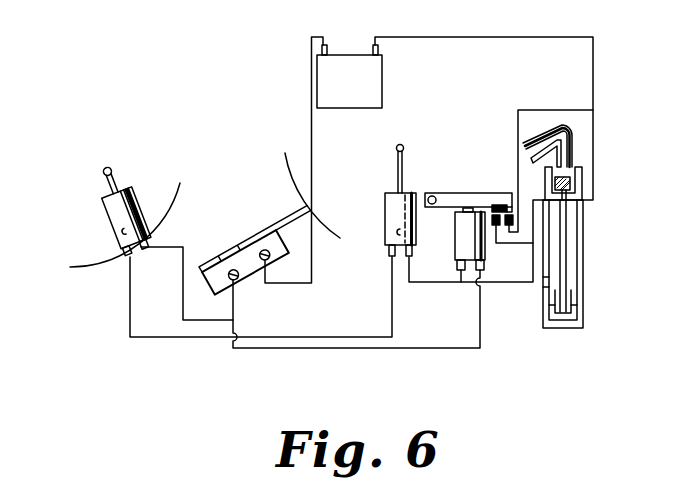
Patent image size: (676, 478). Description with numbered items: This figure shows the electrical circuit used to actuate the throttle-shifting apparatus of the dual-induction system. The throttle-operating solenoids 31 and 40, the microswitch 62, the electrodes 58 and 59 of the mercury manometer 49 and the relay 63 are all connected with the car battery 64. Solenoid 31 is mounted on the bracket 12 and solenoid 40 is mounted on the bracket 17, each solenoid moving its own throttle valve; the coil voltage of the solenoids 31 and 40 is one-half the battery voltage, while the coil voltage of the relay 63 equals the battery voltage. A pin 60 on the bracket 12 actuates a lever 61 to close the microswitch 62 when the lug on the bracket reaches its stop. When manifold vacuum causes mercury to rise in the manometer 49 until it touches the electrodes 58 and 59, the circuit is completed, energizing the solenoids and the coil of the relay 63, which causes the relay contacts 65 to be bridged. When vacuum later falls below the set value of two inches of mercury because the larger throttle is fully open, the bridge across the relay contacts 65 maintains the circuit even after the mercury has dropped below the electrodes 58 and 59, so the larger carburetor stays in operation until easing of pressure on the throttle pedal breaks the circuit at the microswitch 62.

The bracket 12 is at (287, 160).
The bracket 17 is at (180, 178).
The solenoid 31 is at (385, 208).
The solenoid 40 is at (138, 200).
The mercury manometer 49 is at (583, 276).
The electrode 58 is at (554, 175).
The electrode 59 is at (573, 203).
The pin 60 is at (254, 248).
The lever 61 is at (259, 234).
The microswitch 62 is at (248, 281).
The relay 63 is at (455, 240).
The car battery 64 is at (383, 82).
The relay contacts 65 is at (498, 227).